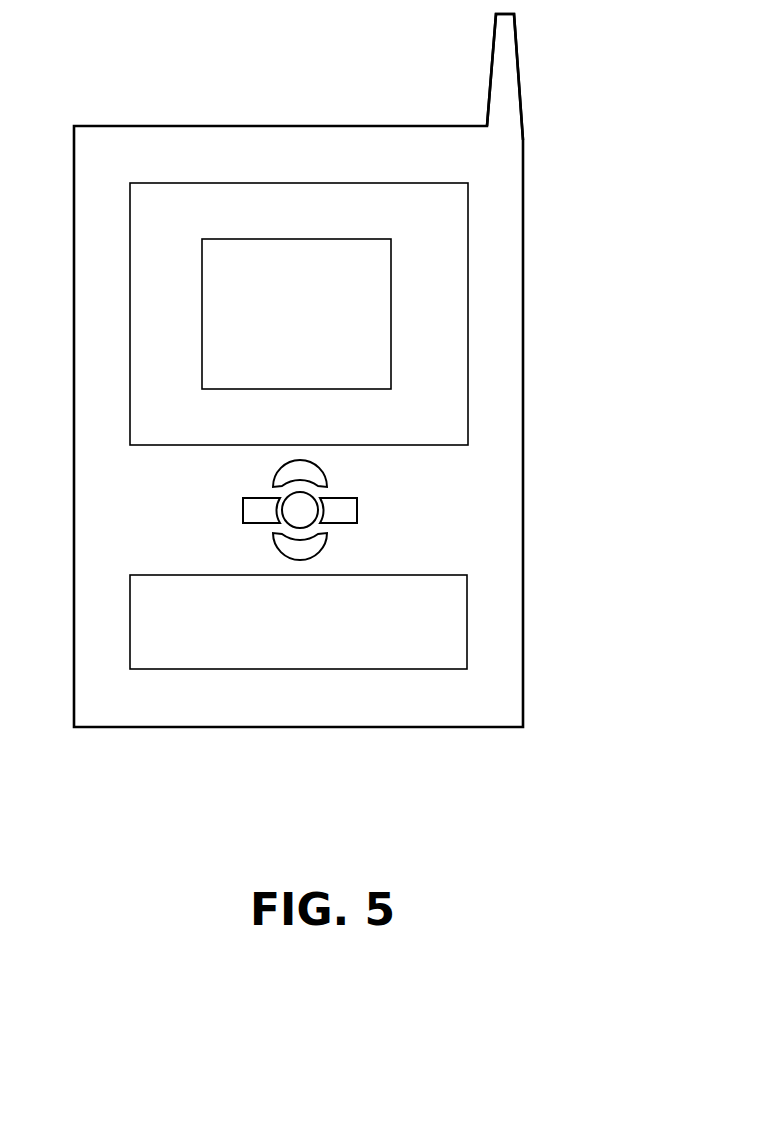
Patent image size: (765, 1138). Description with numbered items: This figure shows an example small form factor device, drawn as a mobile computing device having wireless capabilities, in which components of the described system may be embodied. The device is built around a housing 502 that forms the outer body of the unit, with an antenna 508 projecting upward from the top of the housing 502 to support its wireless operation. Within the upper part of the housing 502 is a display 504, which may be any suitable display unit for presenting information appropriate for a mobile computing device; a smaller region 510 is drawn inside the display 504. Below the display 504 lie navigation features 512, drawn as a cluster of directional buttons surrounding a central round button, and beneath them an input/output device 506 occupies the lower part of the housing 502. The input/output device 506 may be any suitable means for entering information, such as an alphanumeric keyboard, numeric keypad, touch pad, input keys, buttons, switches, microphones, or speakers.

The housing 502 is at (524, 427).
The display 504 is at (468, 201).
The input/output (I/O) device 506 is at (468, 612).
The antenna 508 is at (492, 63).
The display window 510 is at (393, 286).
The navigation features 512 is at (388, 501).